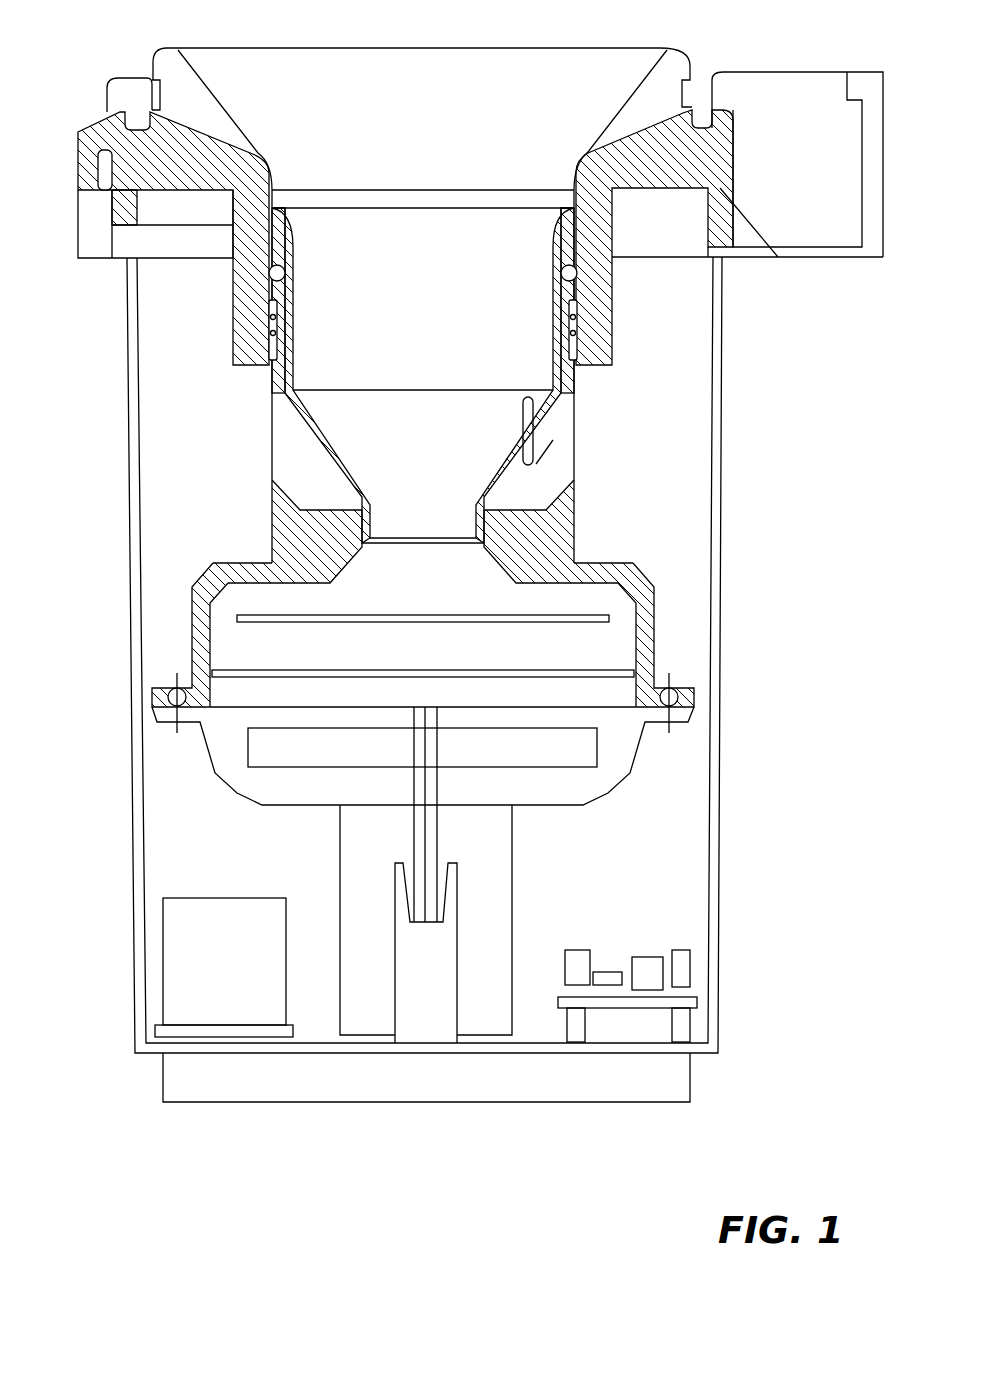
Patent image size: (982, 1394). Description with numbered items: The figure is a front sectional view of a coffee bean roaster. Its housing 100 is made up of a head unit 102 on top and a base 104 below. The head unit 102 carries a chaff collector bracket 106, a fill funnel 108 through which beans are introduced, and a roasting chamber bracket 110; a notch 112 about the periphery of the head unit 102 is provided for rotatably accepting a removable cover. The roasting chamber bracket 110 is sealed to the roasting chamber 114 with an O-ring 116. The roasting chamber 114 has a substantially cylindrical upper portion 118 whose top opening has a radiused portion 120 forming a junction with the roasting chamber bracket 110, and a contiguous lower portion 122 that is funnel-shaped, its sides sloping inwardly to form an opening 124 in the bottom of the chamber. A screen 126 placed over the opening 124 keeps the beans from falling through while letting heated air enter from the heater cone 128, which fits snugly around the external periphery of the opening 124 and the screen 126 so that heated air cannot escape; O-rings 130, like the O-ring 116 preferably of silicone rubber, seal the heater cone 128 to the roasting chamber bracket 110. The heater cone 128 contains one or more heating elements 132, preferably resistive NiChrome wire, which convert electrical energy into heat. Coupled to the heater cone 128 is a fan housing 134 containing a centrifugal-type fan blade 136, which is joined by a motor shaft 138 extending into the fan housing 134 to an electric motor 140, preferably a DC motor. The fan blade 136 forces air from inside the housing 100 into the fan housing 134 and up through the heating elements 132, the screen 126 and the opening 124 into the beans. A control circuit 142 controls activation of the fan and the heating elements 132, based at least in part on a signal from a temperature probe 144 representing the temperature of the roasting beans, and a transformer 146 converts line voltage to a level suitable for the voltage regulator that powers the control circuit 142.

The housing 100 is at (127, 482).
The head unit 102 is at (97, 263).
The base 104 is at (692, 1082).
The chaff collector bracket 106 is at (783, 72).
The fill funnel 108 is at (630, 47).
The roasting chamber bracket 110 is at (78, 165).
The notch 112 is at (150, 80).
The roasting chamber 114 is at (575, 408).
The O-ring 116 is at (267, 317).
The upper portion 118 is at (553, 317).
The radiused portion 120 is at (553, 232).
The lower portion 122 is at (503, 465).
The opening 124 is at (429, 530).
The screen 126 is at (385, 547).
The heater cone 128 is at (640, 577).
The O-rings 130 is at (270, 333).
The heating elements 132 is at (375, 622).
The fan housing 134 is at (609, 786).
The fan blade 136 is at (592, 738).
The motor shaft 138 is at (438, 827).
The electric motor 140 is at (368, 1015).
The control circuit 142 is at (647, 947).
The temperature probe 144 is at (536, 455).
The transformer 146 is at (247, 1012).